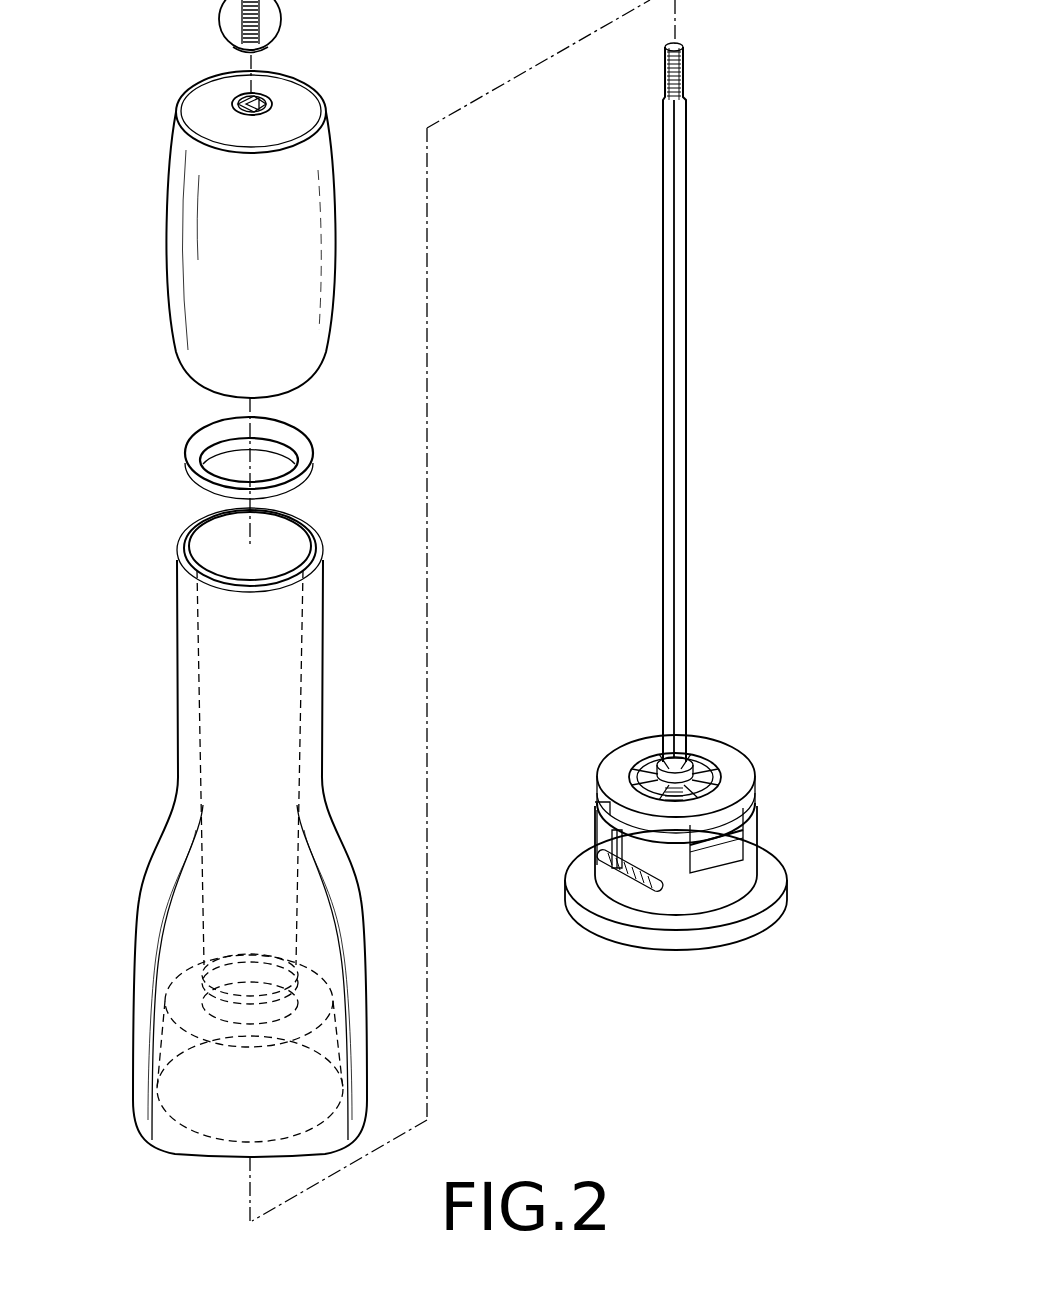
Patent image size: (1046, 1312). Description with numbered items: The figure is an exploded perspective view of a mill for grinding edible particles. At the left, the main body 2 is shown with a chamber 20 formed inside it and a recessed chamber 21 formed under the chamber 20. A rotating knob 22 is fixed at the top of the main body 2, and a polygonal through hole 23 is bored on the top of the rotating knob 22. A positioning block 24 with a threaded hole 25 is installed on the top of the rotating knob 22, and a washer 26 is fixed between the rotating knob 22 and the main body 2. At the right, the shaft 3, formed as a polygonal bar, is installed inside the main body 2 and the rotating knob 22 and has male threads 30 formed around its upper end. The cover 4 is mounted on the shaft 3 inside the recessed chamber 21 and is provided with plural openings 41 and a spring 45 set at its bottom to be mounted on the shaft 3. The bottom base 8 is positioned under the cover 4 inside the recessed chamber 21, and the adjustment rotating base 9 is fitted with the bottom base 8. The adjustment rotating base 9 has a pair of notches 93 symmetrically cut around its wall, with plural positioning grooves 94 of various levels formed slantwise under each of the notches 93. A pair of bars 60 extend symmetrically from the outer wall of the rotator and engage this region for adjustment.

The main body 2 is at (177, 718).
The chamber 20 is at (285, 540).
The recessed chamber 21 is at (202, 1120).
The rotating knob 22 is at (300, 357).
The polygonal through hole 23 is at (270, 103).
The positioning block 24 is at (272, 22).
The threaded hole 25 is at (240, 30).
The washer 26 is at (305, 455).
The shaft 3 is at (680, 428).
The male threads 30 is at (686, 80).
The cover 4 is at (713, 747).
The openings 41 is at (707, 775).
The spring 45 is at (683, 807).
The bottom base 8 is at (722, 830).
The adjustment rotating base 9 is at (745, 932).
The notches 93 is at (622, 830).
The positioning grooves 94 is at (635, 880).
The bars 60 is at (618, 868).